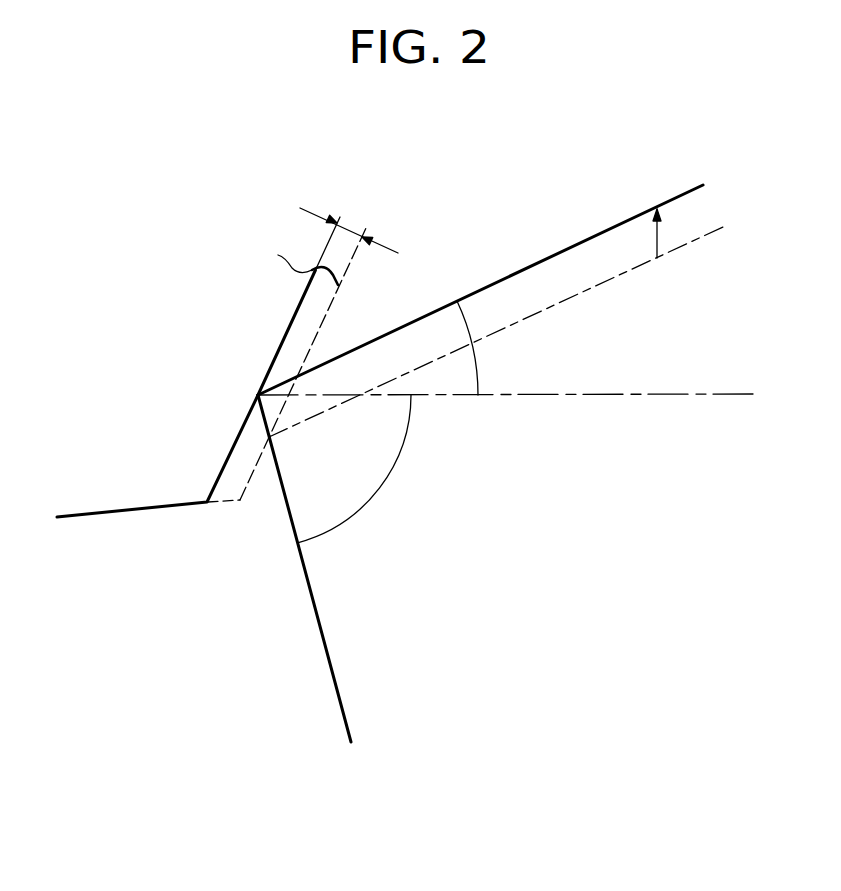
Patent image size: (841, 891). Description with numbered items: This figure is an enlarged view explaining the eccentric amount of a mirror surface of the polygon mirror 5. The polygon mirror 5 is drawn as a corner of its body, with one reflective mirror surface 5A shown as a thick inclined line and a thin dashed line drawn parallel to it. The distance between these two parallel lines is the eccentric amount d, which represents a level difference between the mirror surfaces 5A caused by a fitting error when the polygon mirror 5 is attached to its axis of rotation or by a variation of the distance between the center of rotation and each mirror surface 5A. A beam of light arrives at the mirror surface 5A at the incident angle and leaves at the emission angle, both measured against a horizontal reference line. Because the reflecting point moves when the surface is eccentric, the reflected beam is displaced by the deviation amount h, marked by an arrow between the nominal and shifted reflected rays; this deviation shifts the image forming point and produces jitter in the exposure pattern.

The polygon mirror 5 is at (132, 493).
The mirror surface 5A is at (304, 302).
The eccentric amount d is at (349, 227).
The deviation amount h is at (712, 252).